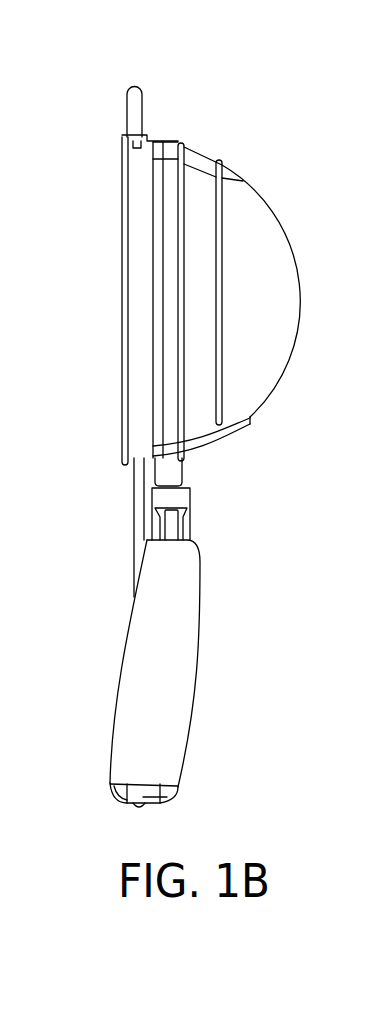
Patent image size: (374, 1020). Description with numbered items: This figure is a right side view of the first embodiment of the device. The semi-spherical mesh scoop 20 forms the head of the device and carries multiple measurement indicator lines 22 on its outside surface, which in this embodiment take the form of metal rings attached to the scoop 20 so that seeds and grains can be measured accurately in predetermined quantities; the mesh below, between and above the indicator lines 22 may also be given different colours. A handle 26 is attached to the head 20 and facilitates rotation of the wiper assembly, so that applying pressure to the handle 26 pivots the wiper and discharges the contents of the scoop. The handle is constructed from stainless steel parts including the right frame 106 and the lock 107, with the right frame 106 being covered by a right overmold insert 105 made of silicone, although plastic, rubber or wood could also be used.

The scoop 20 is at (319, 373).
The measurement indicator lines 22 is at (220, 160).
The handle 26 is at (168, 678).
The right overmold insert 105 is at (172, 637).
The right frame 106 is at (168, 687).
The lock 107 is at (167, 802).